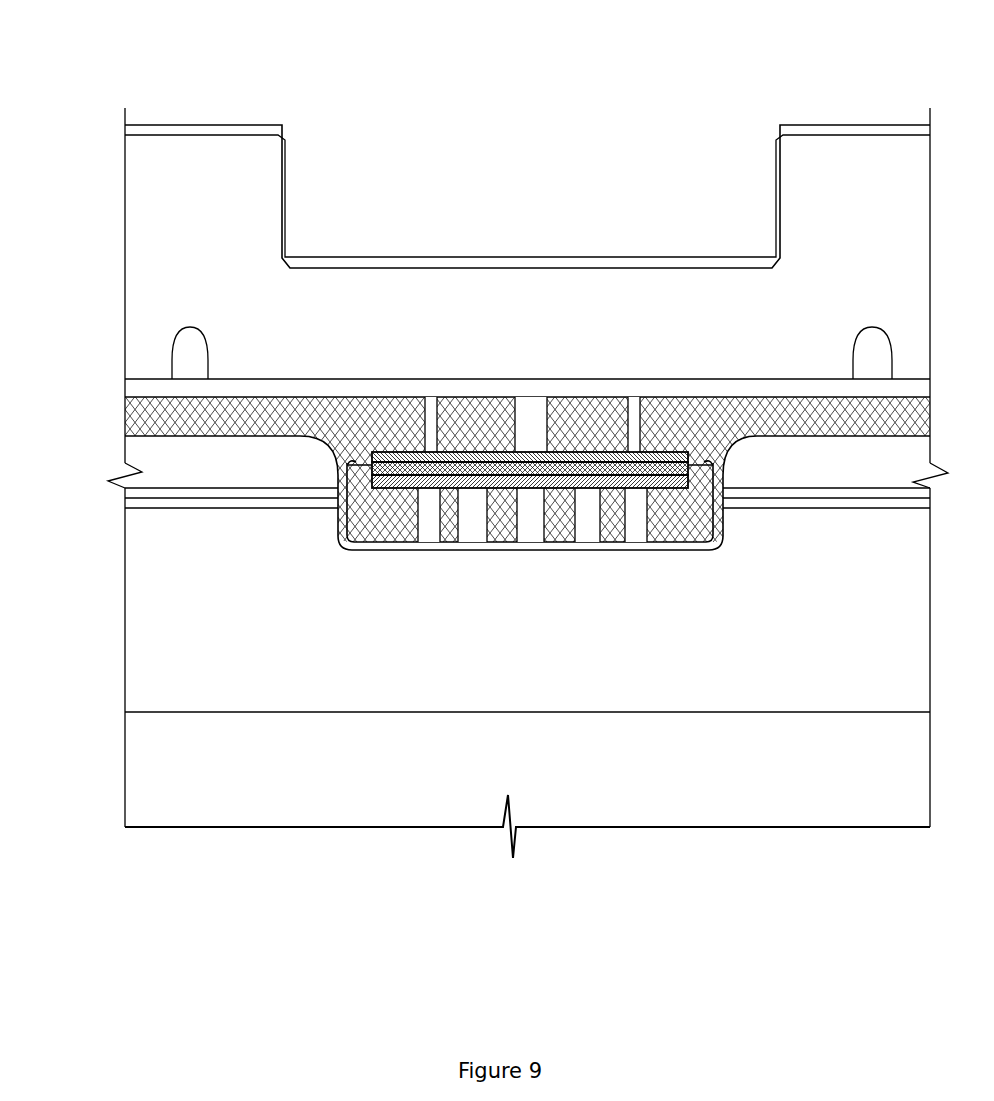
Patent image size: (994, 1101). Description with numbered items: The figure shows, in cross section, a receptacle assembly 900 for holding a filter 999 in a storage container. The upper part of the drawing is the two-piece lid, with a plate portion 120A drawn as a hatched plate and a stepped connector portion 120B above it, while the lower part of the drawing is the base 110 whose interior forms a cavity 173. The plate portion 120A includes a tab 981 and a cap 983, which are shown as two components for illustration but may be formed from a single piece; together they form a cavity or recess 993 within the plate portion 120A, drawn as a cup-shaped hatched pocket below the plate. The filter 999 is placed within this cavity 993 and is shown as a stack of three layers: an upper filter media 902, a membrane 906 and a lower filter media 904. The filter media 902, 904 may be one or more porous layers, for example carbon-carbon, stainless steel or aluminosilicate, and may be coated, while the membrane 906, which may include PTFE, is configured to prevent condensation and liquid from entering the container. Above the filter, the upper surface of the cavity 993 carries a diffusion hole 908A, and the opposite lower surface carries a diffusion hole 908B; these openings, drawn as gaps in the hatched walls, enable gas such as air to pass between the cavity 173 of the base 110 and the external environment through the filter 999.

The receptacle assembly 900 is at (140, 48).
The plate portion 120A is at (96, 405).
The connector portion 120B is at (838, 223).
The cap 983 is at (297, 428).
The tab 981 is at (349, 462).
The diffusion hole 908A is at (429, 403).
The membrane 906 is at (498, 463).
The upper filter media 902 is at (590, 398).
The cavity or recess 993 is at (352, 542).
The diffusion hole 908B is at (428, 518).
The lower filter media 904 is at (477, 488).
The cavity 173 is at (523, 616).
The filter 999 is at (614, 442).
The base 110 is at (853, 682).